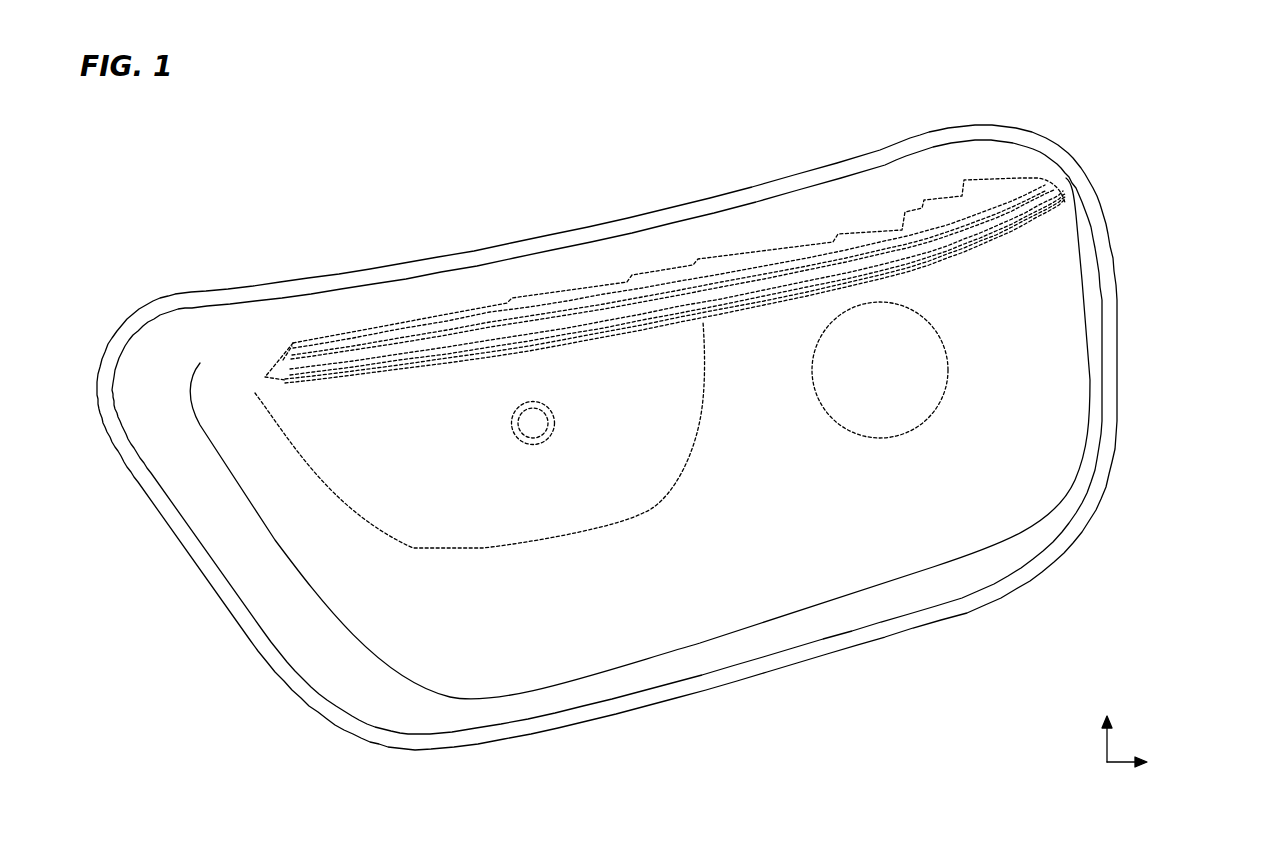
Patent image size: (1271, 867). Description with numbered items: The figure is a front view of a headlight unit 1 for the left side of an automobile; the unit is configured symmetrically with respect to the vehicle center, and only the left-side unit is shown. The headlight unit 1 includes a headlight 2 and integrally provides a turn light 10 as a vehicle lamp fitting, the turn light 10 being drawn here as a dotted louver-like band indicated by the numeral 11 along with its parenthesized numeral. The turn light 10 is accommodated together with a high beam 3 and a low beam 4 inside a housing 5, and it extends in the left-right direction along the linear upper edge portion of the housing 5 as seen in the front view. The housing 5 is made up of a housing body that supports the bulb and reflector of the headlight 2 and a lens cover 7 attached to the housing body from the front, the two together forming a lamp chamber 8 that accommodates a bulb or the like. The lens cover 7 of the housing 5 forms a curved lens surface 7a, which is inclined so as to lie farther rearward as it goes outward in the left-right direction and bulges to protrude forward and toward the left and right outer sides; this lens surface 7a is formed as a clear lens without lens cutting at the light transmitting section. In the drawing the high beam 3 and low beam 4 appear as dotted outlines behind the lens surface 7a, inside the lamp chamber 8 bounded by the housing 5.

The headlight unit 1 is at (878, 85).
The housing 5 is at (975, 118).
The louver portion 11 is at (1026, 170).
The turn light 10 is at (705, 238).
The lens surface 7a is at (1027, 294).
The lens cover 7 is at (702, 438).
The lamp chamber 8 is at (1038, 348).
The high beam 3 is at (543, 518).
The headlight 2 is at (630, 553).
The low beam 4 is at (882, 413).